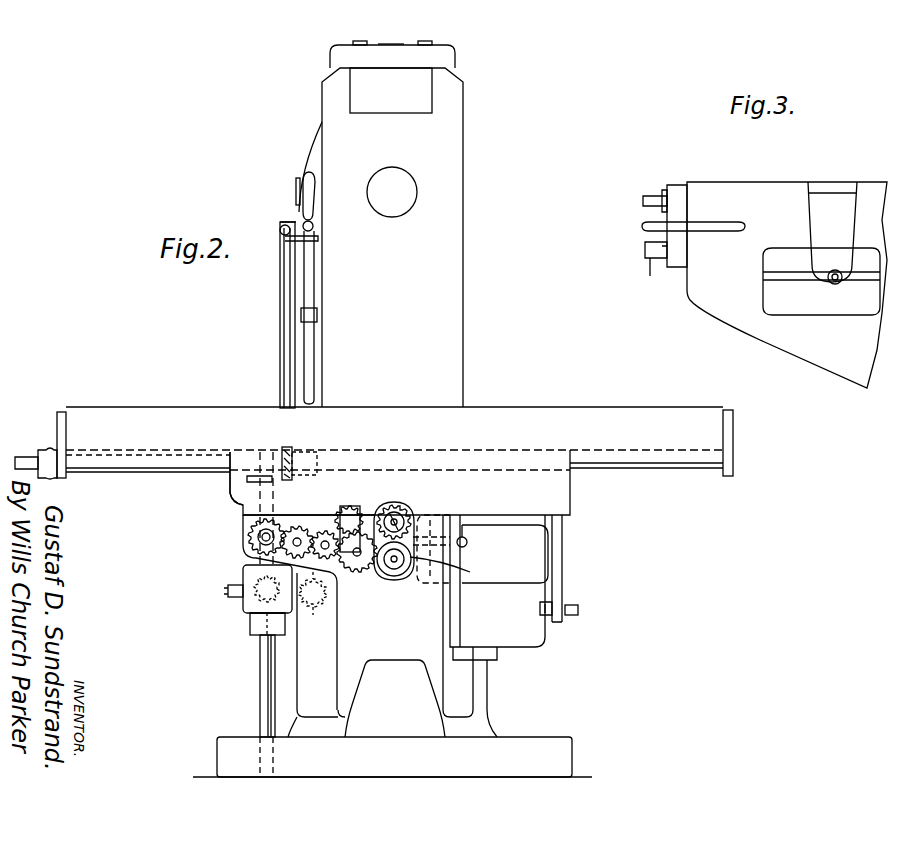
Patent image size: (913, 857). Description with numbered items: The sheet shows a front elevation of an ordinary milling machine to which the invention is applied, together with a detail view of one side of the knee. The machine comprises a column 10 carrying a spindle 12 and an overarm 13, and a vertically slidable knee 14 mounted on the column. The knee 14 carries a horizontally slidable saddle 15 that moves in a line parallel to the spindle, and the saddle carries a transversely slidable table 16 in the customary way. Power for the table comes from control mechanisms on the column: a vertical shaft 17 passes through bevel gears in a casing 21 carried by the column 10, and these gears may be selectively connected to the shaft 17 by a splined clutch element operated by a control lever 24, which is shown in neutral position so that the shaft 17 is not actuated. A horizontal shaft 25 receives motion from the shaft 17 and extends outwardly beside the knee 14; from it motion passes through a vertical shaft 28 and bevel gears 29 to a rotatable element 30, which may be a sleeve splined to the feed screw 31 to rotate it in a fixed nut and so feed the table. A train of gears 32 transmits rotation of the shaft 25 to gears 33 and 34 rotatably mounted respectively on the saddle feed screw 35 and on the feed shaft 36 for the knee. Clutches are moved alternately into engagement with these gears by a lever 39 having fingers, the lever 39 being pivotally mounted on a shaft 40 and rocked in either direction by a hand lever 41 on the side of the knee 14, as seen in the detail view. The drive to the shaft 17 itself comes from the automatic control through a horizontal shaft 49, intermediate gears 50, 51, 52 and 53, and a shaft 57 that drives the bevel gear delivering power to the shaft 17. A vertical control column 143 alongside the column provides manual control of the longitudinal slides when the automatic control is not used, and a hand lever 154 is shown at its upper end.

In FIG. 2, the column 10 is at (455, 238).
In FIG. 2, the spindle 12 is at (410, 190).
In FIG. 2, the overarm 13 is at (425, 93).
In FIG. 2, the knee 14 is at (420, 645).
In FIG. 3, the knee 14 is at (830, 355).
In FIG. 2, the saddle 15 is at (573, 497).
In FIG. 2, the table 16 is at (622, 410).
In FIG. 3, the table 16 is at (625, 384).
In FIG. 2, the vertical shaft 17 is at (265, 665).
In FIG. 2, the casing 21 is at (250, 598).
In FIG. 2, the control lever 24 is at (225, 590).
In FIG. 2, the horizontal shaft 25 is at (258, 537).
In FIG. 2, the vertical shaft 28 is at (250, 500).
In FIG. 2, the bevel gears 29 is at (298, 525).
In FIG. 2, the rotatable element 30 is at (305, 452).
In FIG. 2, the feed screw 31 is at (165, 460).
In FIG. 2, the train of gears 32 is at (337, 585).
In FIG. 2, the gear 33 is at (400, 506).
In FIG. 2, the gear 34 is at (393, 580).
In FIG. 2, the saddle feed screw 35 is at (404, 517).
In FIG. 2, the feed shaft 36 is at (451, 569).
In FIG. 2, the lever 39 is at (425, 520).
In FIG. 2, the shaft 40 is at (430, 585).
In FIG. 2, the hand lever 41 is at (468, 542).
In FIG. 3, the hand lever 41 is at (640, 226).
In FIG. 2, the horizontal shaft 49 is at (362, 532).
In FIG. 2, the intermediate gear 50 is at (350, 506).
In FIG. 2, the intermediate gear 51 is at (326, 530).
In FIG. 2, the intermediate gear 52 is at (315, 615).
In FIG. 2, the intermediate gear 53 is at (250, 613).
In FIG. 2, the shaft 57 is at (247, 575).
In FIG. 2, the vertical control column 143 is at (290, 312).
In FIG. 2, the hand lever 154 is at (285, 224).